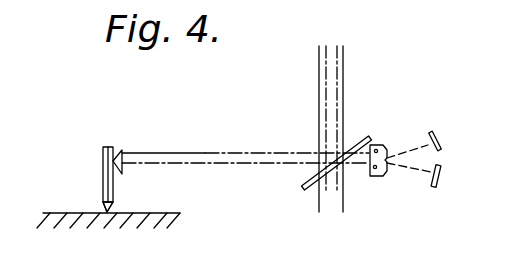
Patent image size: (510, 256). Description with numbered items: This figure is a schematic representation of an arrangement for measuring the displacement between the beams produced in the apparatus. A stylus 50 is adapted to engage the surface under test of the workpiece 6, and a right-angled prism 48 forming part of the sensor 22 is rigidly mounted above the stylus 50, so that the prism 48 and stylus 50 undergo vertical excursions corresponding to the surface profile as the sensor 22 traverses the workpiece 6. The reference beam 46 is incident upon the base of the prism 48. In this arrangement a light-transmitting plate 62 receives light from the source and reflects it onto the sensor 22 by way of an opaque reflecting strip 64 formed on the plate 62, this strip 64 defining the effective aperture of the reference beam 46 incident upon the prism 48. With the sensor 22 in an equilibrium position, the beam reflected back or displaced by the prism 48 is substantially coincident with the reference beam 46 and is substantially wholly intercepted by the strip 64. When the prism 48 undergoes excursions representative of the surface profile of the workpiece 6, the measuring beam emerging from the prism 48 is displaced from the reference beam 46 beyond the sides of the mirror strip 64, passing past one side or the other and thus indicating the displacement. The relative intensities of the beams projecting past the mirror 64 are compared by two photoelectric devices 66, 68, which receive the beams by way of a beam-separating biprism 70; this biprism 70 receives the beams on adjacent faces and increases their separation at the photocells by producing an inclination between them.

The workpiece 6 is at (170, 214).
The sensor 22 is at (97, 175).
The reference beam 46 is at (175, 153).
The right-angled prism 48 is at (105, 146).
The stylus 50 is at (104, 210).
The light-transmitting plate 62 is at (370, 137).
The opaque reflecting strip 64 is at (330, 153).
The photoelectric device 66 is at (437, 131).
The photoelectric device 68 is at (435, 188).
The biprism 70 is at (379, 177).